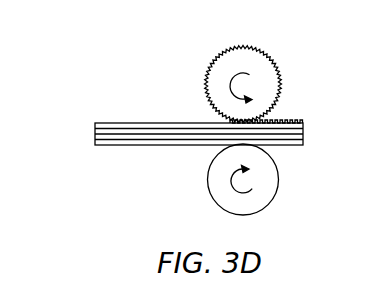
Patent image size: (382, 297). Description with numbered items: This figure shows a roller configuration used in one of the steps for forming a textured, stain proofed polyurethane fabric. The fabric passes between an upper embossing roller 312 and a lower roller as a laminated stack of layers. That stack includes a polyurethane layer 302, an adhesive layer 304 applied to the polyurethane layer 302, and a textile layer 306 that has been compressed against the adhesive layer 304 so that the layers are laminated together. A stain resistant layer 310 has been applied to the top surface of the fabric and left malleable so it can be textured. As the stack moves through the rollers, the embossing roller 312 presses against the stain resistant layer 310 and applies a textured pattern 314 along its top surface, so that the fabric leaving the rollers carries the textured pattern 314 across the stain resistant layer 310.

The polyurethane layer 302 is at (93, 127).
The adhesive layer 304 is at (93, 137).
The textile layer 306 is at (93, 143).
The stain resistant layer 310 is at (167, 122).
The embossing roller 312 is at (273, 61).
The textured pattern 314 is at (286, 119).